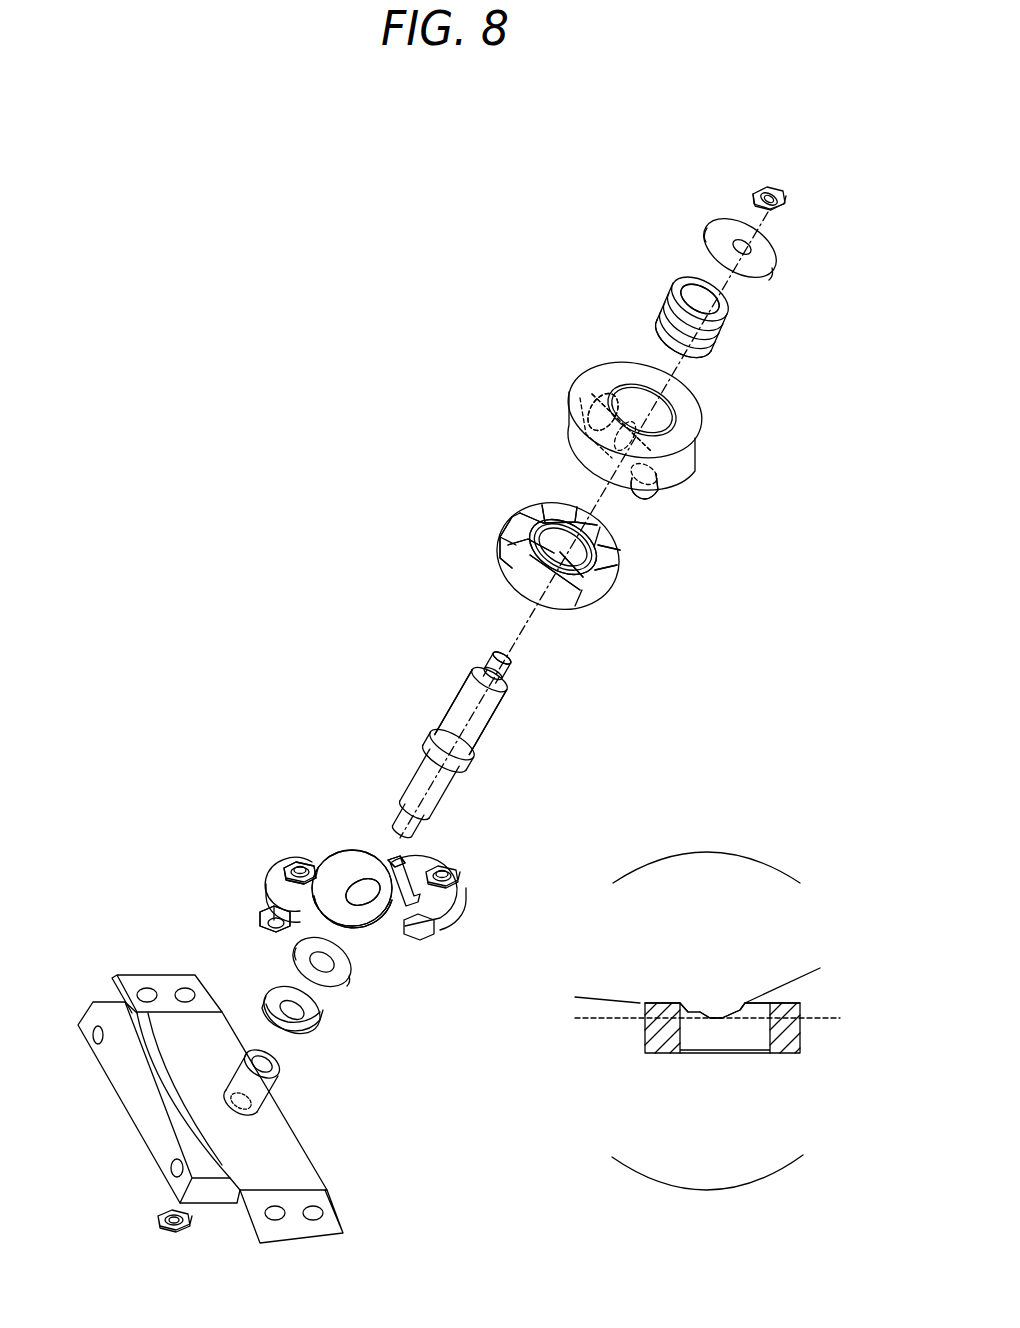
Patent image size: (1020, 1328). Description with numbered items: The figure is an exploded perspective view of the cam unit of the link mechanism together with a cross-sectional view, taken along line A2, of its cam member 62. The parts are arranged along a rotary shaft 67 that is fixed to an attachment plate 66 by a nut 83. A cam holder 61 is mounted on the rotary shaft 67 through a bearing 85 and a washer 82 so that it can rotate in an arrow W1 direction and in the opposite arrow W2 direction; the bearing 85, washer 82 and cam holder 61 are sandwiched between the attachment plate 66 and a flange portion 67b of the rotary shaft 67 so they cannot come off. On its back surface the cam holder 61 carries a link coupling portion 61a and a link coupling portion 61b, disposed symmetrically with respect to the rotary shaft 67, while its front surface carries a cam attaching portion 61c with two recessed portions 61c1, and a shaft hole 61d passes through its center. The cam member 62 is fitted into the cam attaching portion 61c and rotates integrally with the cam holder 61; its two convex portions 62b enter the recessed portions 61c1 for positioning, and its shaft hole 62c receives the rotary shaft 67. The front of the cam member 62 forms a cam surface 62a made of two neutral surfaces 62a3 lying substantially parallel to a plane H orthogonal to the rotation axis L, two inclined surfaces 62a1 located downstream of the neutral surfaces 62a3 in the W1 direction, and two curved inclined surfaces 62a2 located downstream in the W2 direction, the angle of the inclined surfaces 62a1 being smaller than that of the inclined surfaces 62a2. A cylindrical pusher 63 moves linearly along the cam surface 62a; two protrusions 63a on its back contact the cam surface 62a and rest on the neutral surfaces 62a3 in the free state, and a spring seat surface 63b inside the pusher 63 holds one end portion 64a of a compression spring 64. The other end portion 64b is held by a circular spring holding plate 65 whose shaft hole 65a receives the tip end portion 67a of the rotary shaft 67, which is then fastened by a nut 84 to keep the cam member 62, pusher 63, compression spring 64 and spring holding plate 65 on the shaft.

The cam holder 61 is at (400, 955).
The link coupling portion 61a is at (262, 926).
The link coupling portion 61b is at (440, 930).
The cam attaching portion 61c is at (345, 860).
The recessed portion 61c1 is at (312, 858).
The shaft hole 61d is at (366, 884).
The cam member 62 is at (502, 578).
The cam surface 62a is at (614, 580).
The inclined surface 62a1 is at (535, 512).
The inclined surface 62a2 is at (562, 508).
The neutral surface 62a3 is at (545, 496).
The convex portion 62b is at (508, 558).
The shaft hole 62c is at (616, 548).
The pusher 63 is at (716, 432).
The protrusion 63a is at (590, 394).
The spring seat surface 63b is at (566, 426).
The compression spring 64 is at (652, 312).
The one end portion 64a is at (700, 350).
The other end portion 64b is at (697, 286).
The spring holding plate 65 is at (706, 216).
The shaft hole 65a is at (740, 244).
The attachment plate 66 is at (290, 1160).
The rotary shaft 67 is at (435, 765).
The tip end portion 67a is at (508, 668).
The flange portion 67b is at (478, 690).
The washer 82 is at (345, 975).
The nut 83 is at (160, 1214).
The nut 84 is at (766, 188).
The bearing 85 is at (318, 1020).
The rotation axis L is at (268, 1044).
The section line A2 is at (470, 540).
The arrow W1 direction W1 is at (674, 373).
The arrow W2 direction W2 is at (684, 383).
The plane H is at (612, 1012).